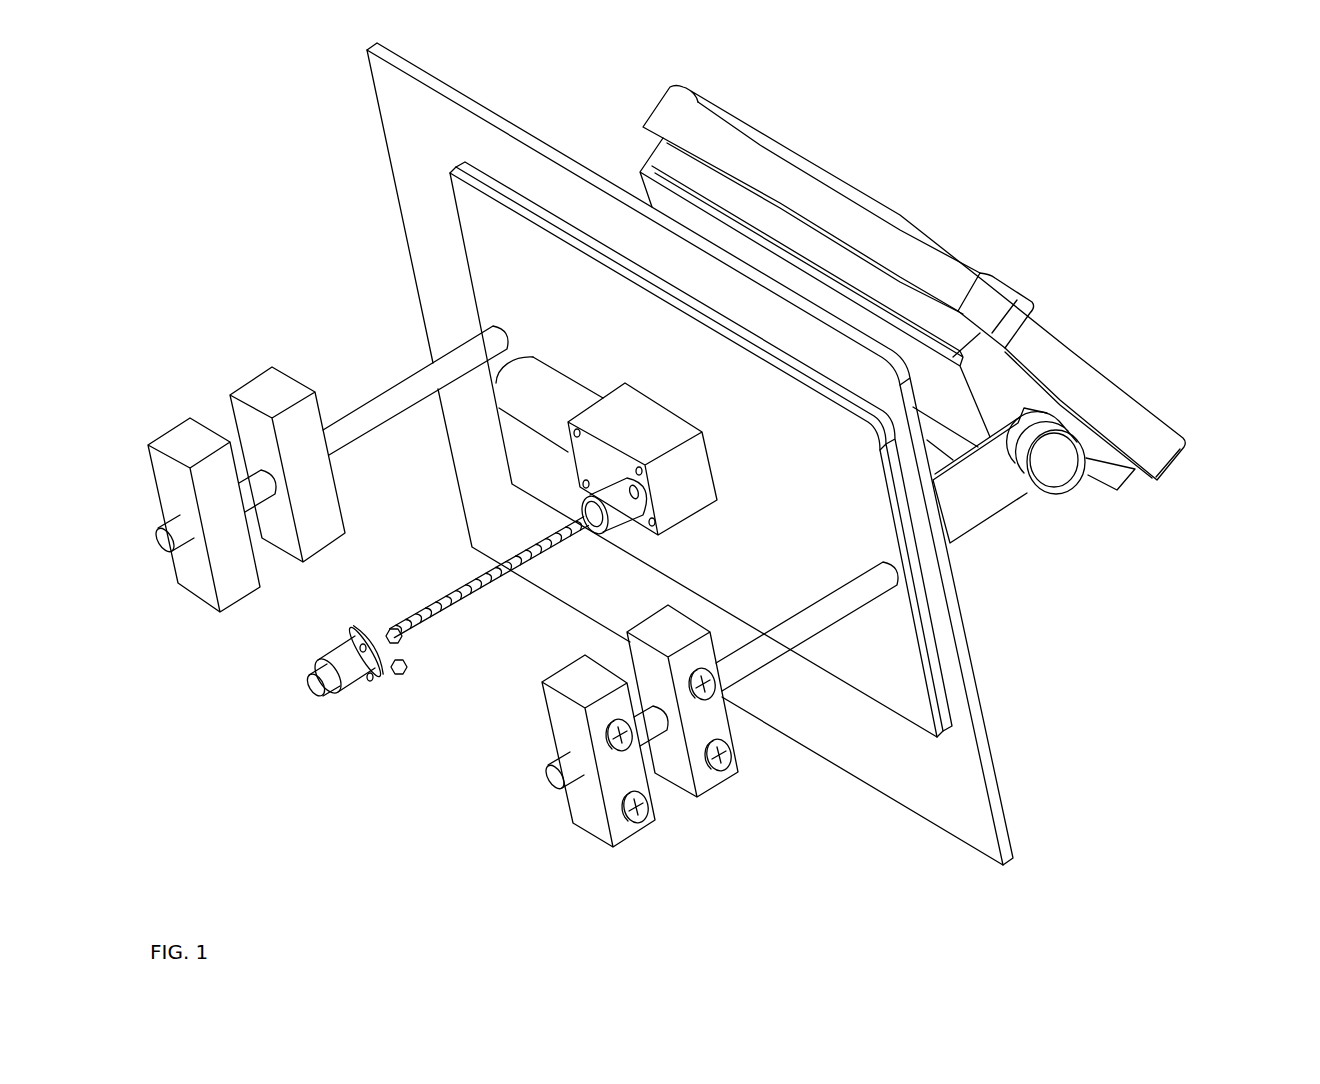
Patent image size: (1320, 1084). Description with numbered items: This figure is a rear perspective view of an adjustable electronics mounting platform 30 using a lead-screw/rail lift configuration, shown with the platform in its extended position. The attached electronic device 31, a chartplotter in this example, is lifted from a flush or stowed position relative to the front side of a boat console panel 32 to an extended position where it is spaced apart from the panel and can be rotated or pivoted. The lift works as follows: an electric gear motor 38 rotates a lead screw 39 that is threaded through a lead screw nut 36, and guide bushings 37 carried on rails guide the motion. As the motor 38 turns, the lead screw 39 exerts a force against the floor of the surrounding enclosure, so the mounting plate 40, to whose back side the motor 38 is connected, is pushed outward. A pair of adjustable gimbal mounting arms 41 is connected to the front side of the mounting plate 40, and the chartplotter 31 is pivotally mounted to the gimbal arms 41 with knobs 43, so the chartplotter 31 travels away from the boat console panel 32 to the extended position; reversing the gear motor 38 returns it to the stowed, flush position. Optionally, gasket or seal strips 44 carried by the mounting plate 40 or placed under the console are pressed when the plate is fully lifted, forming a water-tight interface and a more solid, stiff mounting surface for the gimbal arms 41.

The adjustable electronics mounting platform 30 is at (228, 160).
The electronic device 31 is at (1168, 412).
The boat console panel 32 is at (1005, 812).
The lead screw nut 36 is at (323, 658).
The guide bushings 37 is at (633, 838).
The electric gear motor 38 is at (550, 420).
The lead screw 39 is at (437, 618).
The mounting plate 40 is at (455, 226).
The gimbal mounting arms 41 is at (997, 513).
The knobs 43 is at (1058, 494).
The gasket or seal strips 44 is at (948, 662).